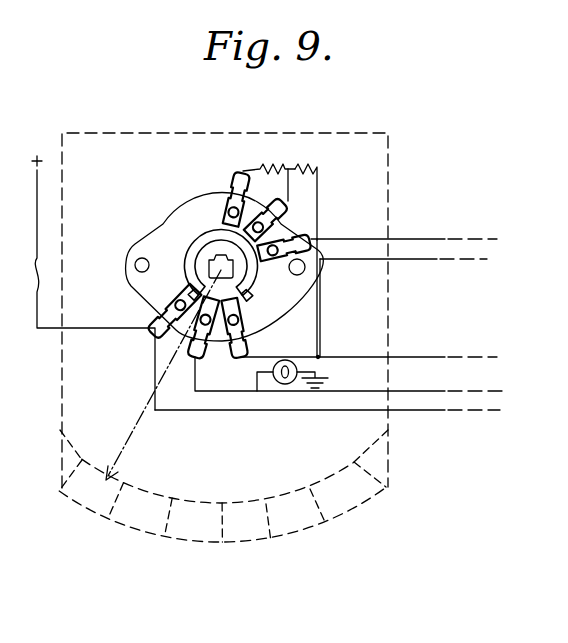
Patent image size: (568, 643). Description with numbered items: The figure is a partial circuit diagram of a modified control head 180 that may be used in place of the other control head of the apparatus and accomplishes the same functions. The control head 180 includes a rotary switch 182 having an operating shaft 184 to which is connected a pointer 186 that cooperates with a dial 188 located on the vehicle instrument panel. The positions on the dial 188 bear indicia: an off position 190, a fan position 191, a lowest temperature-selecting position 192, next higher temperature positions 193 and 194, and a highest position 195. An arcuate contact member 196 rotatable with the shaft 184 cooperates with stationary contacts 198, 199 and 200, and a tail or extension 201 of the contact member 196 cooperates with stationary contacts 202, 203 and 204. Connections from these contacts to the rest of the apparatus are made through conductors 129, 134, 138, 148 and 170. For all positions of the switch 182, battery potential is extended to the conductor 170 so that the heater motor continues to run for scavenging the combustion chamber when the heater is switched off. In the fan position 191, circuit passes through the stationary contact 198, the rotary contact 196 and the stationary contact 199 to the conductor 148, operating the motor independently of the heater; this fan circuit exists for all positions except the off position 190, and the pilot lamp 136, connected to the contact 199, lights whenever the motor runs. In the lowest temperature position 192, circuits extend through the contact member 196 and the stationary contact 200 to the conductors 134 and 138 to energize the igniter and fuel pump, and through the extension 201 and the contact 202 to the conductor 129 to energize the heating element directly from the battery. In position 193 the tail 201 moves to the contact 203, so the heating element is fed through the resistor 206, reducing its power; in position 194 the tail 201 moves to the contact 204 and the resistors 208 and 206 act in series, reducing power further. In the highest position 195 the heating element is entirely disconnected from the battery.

The conductor 129 is at (430, 239).
The conductor 134 is at (415, 355).
The pilot lamp 136 is at (287, 385).
The conductor 138 is at (425, 261).
The conductor 148 is at (425, 390).
The conductor 170 is at (412, 412).
The control head 180 is at (100, 132).
The rotary switch 182 is at (182, 209).
The operating shaft 184 is at (218, 264).
The pointer 186 is at (122, 445).
The dial 188 is at (153, 500).
The dial position 190 is at (83, 507).
The dial position 191 is at (137, 532).
The lowest temperature-selecting position 192 is at (185, 543).
The next higher temperature position 193 is at (242, 547).
The next higher position 194 is at (296, 537).
The highest position 195 is at (356, 508).
The arcuate contact member 196 is at (199, 242).
The stationary contact 198 is at (160, 312).
The stationary contact 199 is at (206, 348).
The stationary contact 200 is at (252, 340).
The tail or extension 201 is at (303, 296).
The stationary contact 202 is at (296, 238).
The stationary contact 203 is at (292, 212).
The stationary contact 204 is at (236, 178).
The resistor 206 is at (301, 166).
The resistor 208 is at (279, 165).